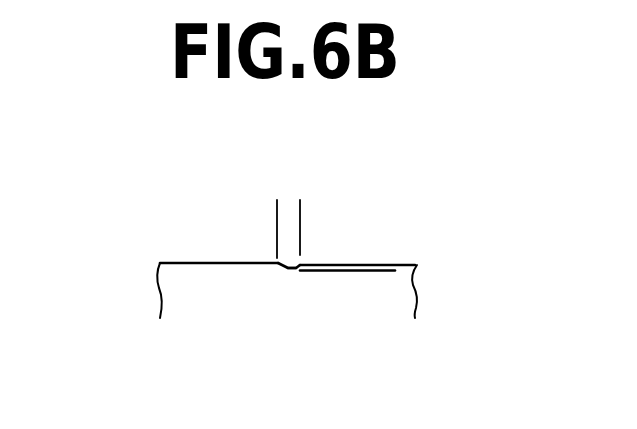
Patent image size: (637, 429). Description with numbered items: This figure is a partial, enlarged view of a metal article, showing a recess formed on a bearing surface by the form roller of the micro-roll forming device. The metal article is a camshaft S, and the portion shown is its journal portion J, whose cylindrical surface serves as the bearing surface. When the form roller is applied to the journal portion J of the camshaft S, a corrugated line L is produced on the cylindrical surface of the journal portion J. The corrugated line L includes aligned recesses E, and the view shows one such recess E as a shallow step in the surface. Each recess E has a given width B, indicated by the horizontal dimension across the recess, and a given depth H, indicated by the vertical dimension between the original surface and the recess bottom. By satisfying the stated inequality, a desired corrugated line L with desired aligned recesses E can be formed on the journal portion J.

The journal portion J is at (175, 290).
The recess E is at (276, 262).
The corrugated line L is at (285, 268).
The camshaft S is at (440, 252).
The width of recess B is at (360, 208).
The depth of recess H is at (377, 203).